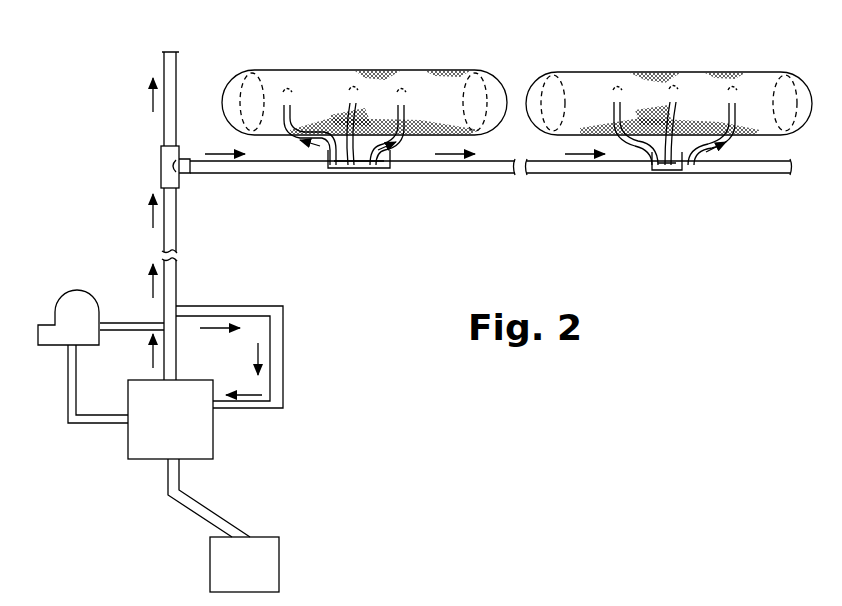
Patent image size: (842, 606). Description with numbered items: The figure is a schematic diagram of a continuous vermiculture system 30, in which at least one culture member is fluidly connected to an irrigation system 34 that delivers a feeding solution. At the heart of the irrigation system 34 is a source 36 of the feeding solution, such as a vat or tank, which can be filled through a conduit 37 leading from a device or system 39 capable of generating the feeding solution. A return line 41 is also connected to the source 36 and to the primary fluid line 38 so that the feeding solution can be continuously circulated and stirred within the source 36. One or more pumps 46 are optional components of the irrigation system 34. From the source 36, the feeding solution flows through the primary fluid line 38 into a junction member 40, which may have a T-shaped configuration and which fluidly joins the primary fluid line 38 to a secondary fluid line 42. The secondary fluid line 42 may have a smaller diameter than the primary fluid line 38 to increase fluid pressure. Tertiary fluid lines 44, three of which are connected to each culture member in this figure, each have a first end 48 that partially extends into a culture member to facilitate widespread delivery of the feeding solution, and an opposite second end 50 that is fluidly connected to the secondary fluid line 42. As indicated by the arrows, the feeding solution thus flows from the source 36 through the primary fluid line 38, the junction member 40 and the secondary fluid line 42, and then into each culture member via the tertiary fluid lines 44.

The continuous vermiculture system 30 is at (560, 36).
The irrigation system 34 is at (98, 139).
The source of a feeding solution 36 is at (170, 419).
The conduit 37 is at (216, 500).
The primary fluid line 38 is at (183, 291).
The device or system capable of generating the feeding solution 39 is at (244, 564).
The junction member 40 is at (160, 164).
The return line 41 is at (289, 348).
The secondary fluid line 42 is at (488, 178).
The tertiary fluid line 44 is at (335, 169).
The pump 46 is at (52, 348).
The first end 48 is at (737, 93).
The second end 50 is at (682, 173).